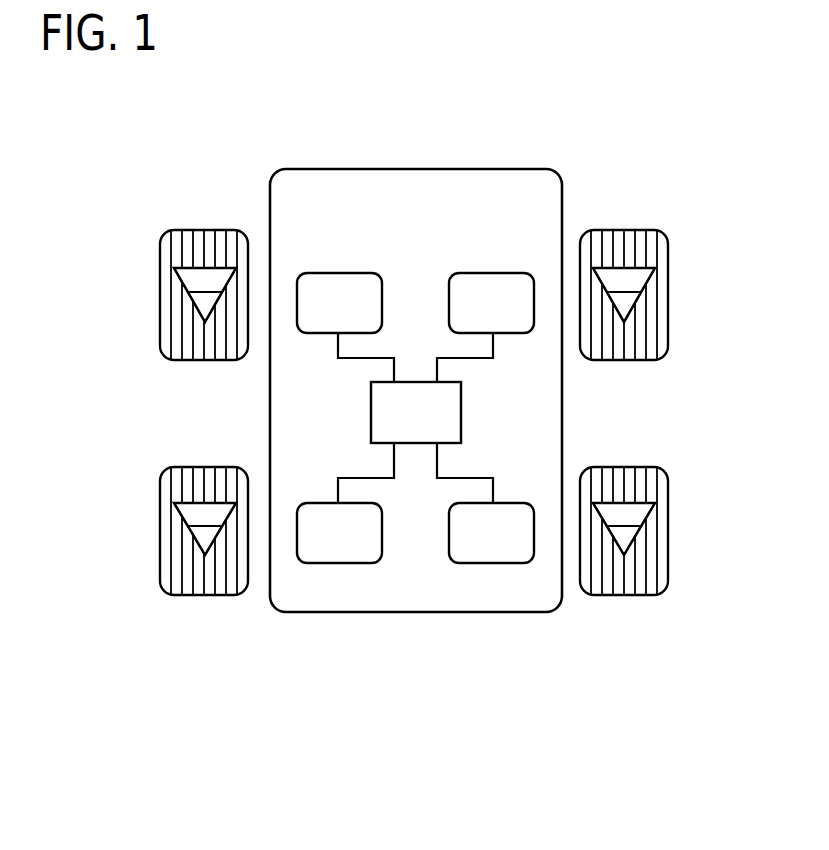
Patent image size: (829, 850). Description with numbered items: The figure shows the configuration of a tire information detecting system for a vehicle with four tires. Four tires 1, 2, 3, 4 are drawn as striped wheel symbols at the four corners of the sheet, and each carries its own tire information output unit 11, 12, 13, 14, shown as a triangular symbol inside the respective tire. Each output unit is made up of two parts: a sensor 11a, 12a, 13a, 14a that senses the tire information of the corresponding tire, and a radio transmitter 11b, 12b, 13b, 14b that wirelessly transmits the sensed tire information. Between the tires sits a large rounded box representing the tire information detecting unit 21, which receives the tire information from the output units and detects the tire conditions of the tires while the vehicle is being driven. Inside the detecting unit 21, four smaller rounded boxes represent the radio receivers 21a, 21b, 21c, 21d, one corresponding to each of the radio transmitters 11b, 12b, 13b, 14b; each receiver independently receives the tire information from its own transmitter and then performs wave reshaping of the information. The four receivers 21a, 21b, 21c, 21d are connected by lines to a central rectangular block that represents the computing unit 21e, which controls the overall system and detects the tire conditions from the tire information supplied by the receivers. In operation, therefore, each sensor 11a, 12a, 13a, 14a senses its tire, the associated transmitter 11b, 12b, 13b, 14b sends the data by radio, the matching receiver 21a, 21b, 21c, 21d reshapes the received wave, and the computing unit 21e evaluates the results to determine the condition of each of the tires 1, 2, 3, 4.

The tire 1 is at (665, 249).
The tire 2 is at (165, 249).
The tire 3 is at (665, 575).
The tire 4 is at (165, 575).
The tire information output unit 11 is at (674, 244).
The sensor 11a is at (630, 298).
The radio transmitter 11b is at (635, 280).
The tire information output unit 12 is at (157, 244).
The sensor 12a is at (200, 298).
The radio transmitter 12b is at (195, 280).
The tire information output unit 13 is at (674, 486).
The sensor 13a is at (628, 535).
The radio transmitter 13b is at (628, 517).
The tire information output unit 14 is at (157, 486).
The sensor 14a is at (200, 535).
The radio transmitter 14b is at (200, 516).
The tire information detecting unit 21 is at (416, 354).
The radio receiver 21a is at (493, 294).
The radio receiver 21b is at (338, 294).
The radio receiver 21c is at (478, 548).
The radio receiver 21d is at (332, 548).
The computing unit 21e is at (443, 410).